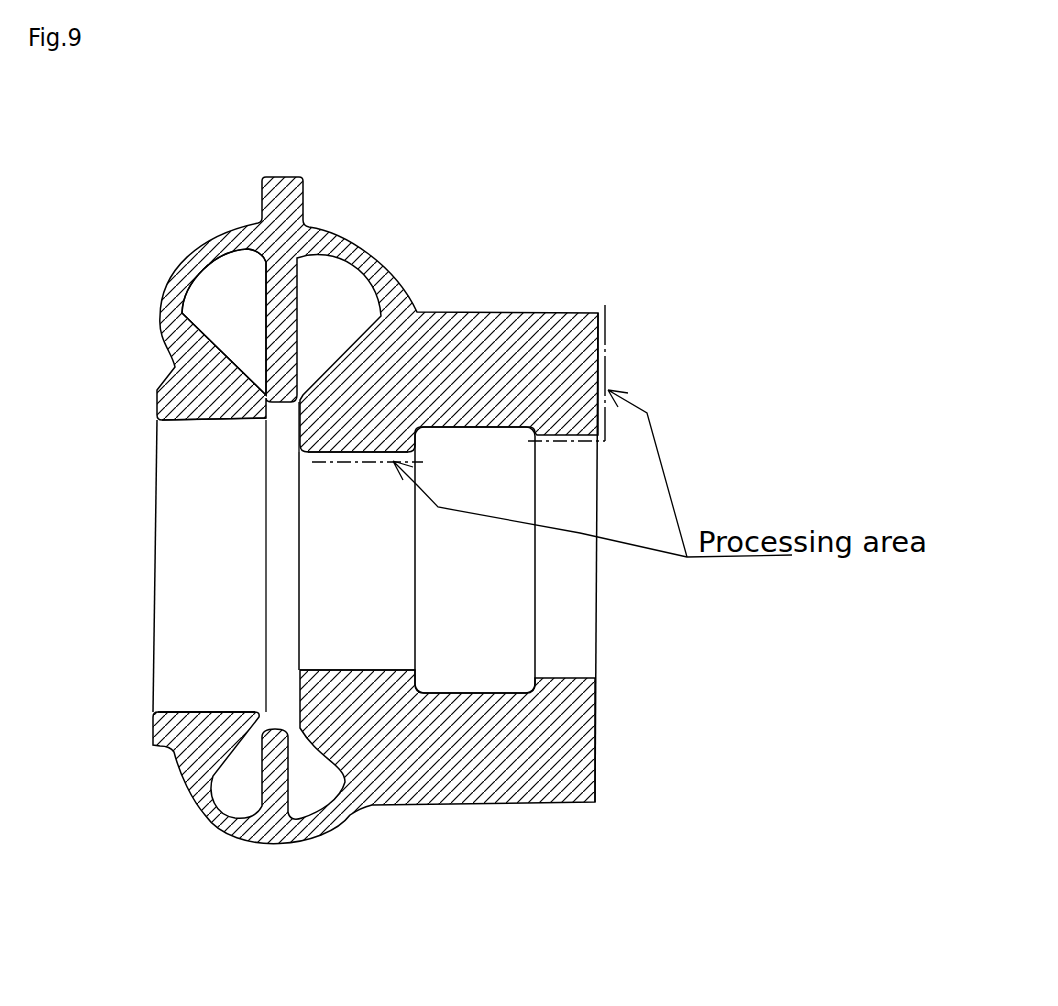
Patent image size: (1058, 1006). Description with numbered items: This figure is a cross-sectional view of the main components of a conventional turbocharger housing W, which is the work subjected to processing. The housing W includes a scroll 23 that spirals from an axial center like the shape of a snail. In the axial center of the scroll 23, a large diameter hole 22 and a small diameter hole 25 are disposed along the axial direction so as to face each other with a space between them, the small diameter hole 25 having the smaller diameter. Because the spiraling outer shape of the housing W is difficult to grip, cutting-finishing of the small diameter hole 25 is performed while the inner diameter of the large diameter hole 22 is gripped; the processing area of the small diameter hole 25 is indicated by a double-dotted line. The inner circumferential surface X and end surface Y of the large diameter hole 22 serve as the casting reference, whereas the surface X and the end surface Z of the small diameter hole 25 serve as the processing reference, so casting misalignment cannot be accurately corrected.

The large diameter hole 22 is at (168, 517).
The scroll 23 is at (212, 312).
The small diameter hole 25 is at (320, 487).
The turbocharger housing W is at (465, 270).
The inner circumferential surface of the large diameter hole X is at (208, 687).
The end surface of the large diameter hole Y is at (266, 517).
The end surface of the small diameter hole Z is at (279, 597).